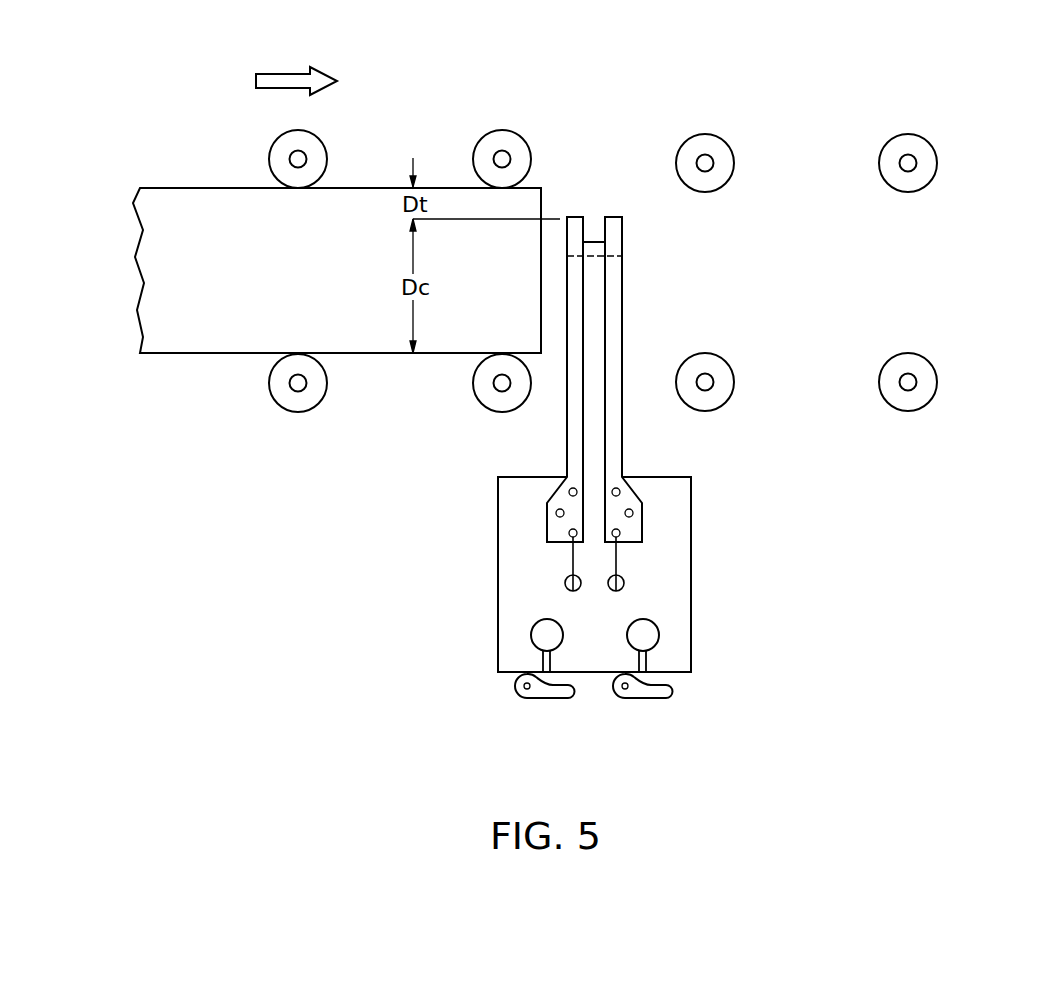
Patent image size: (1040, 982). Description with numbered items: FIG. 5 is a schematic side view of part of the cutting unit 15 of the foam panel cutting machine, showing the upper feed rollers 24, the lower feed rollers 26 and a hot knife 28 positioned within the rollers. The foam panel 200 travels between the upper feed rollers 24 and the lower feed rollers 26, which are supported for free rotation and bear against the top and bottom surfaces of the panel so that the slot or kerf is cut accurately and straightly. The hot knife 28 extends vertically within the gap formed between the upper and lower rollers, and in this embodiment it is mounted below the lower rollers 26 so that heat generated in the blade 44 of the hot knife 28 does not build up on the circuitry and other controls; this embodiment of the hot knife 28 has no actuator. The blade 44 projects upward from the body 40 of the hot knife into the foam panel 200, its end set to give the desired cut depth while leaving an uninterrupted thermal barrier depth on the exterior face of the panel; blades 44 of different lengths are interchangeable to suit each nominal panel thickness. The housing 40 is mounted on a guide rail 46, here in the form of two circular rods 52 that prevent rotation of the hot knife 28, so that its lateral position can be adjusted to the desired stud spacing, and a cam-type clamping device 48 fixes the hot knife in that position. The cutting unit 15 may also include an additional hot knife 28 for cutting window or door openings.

The cutting unit 15 is at (663, 87).
The upper feed roller 24 is at (322, 140).
The lower feed roller 26 is at (274, 401).
The hot knife 28 is at (477, 543).
The body 40 is at (691, 563).
The blade 44 is at (622, 440).
The guide rail 46 is at (660, 628).
The clamping device 48 is at (548, 699).
The circular rods 52 is at (531, 636).
The foam panel 200 is at (163, 310).